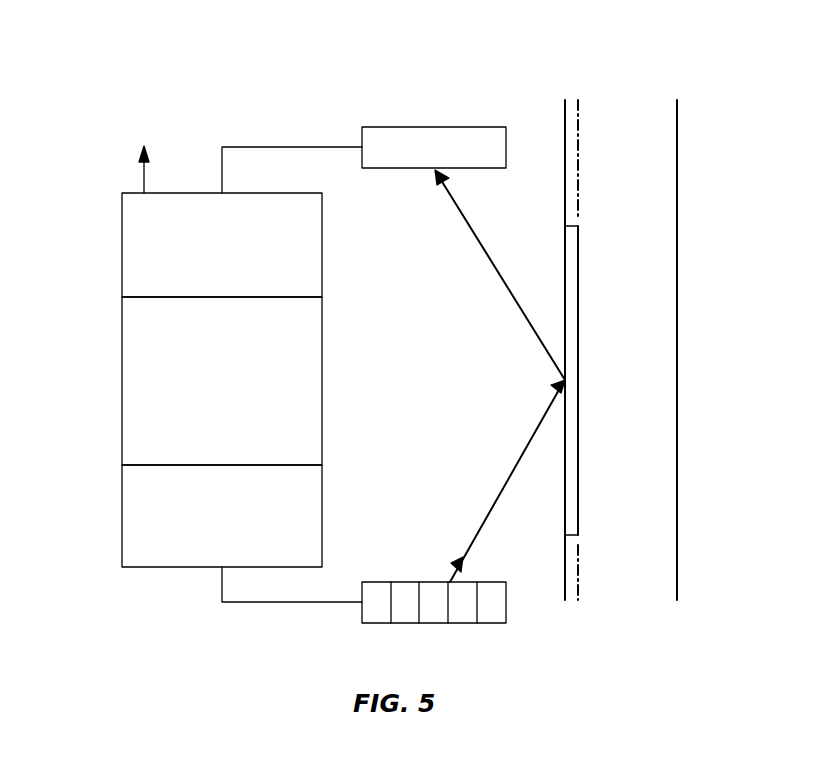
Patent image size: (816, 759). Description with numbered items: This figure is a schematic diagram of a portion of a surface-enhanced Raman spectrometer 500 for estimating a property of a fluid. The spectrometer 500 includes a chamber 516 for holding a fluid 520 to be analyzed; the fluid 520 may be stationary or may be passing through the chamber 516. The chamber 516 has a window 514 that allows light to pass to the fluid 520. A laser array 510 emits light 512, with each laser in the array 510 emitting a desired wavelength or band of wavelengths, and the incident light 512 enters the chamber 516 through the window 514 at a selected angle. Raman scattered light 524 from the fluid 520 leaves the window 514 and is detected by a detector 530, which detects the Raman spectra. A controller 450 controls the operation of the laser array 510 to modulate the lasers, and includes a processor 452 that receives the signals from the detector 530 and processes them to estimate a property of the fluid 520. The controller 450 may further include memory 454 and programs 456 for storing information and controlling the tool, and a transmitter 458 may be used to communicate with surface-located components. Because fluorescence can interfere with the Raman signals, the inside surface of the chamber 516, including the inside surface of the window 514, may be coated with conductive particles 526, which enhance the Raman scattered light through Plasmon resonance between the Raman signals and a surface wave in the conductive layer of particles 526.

The surface-enhanced Raman spectrometer 500 is at (396, 74).
The controller 450 is at (182, 567).
The processor 452 is at (122, 515).
The memory 454 is at (122, 380).
The programs 456 is at (244, 394).
The transmitter 458 is at (122, 245).
The laser array 510 is at (372, 623).
The light 512 is at (500, 492).
The window 514 is at (563, 500).
The chamber 516 is at (677, 207).
The fluid 520 is at (647, 144).
The Raman scattered light 524 is at (497, 274).
The conductive particles 526 is at (578, 572).
The detector 530 is at (433, 127).